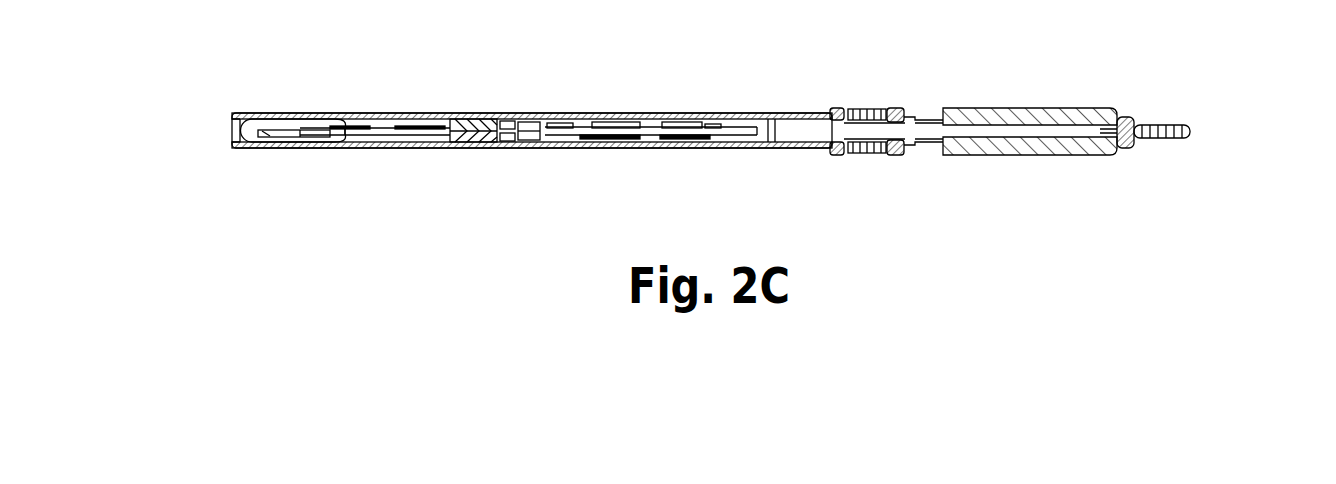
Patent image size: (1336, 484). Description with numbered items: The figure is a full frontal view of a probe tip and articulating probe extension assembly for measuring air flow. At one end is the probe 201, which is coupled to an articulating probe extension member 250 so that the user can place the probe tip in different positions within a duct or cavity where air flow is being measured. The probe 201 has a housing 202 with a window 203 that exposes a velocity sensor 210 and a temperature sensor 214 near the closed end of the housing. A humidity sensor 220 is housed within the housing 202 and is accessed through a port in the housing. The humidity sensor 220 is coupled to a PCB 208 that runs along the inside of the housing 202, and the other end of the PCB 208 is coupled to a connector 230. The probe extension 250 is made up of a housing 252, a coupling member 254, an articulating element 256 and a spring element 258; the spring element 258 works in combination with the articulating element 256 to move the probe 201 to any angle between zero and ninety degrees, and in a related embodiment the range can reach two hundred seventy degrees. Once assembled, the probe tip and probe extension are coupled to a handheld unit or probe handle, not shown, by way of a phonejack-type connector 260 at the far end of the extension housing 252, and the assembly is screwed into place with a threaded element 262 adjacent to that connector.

The probe 201 is at (224, 107).
The housing 202 is at (234, 150).
The window 203 is at (246, 116).
The velocity sensor 210 is at (293, 120).
The temperature sensor 214 is at (342, 149).
The PCB 208 is at (628, 150).
The humidity sensor 220 is at (531, 162).
The connector 230 is at (758, 150).
The articulating probe extension member 250 is at (1205, 183).
The spring element 258 is at (838, 108).
The coupling member 254 is at (873, 108).
The articulating element 256 is at (903, 108).
The housing 252 is at (1047, 108).
The threaded element 262 is at (1130, 115).
The phonejack-type connector 260 is at (1190, 131).